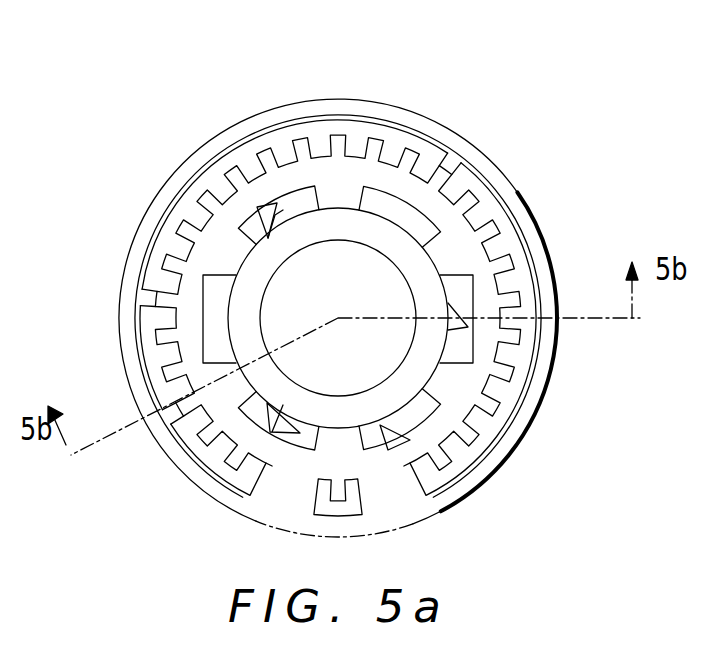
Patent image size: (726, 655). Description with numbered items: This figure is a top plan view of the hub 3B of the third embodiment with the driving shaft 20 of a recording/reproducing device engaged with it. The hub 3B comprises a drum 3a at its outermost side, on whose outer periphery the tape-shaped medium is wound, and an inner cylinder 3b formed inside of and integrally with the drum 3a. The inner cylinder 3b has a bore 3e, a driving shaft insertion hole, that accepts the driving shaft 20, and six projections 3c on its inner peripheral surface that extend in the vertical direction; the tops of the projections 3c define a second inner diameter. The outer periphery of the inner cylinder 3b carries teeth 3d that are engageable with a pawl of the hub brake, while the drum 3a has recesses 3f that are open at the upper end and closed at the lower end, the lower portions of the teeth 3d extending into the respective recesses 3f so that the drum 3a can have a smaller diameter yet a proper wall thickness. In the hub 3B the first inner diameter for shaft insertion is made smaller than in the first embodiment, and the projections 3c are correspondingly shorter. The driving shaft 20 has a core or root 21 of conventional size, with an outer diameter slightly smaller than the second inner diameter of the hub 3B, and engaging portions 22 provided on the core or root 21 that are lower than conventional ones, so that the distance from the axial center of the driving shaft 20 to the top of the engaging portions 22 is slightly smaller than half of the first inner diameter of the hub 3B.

The hub 3B is at (363, 293).
The drum 3a is at (527, 197).
The inner cylinder 3b is at (415, 447).
The projections 3c is at (480, 412).
The teeth 3d is at (482, 400).
The bore 3e is at (484, 291).
The recesses 3f is at (542, 320).
The driving shaft 20 is at (241, 125).
The core or root 21 is at (270, 250).
The engaging portions 22 is at (273, 208).